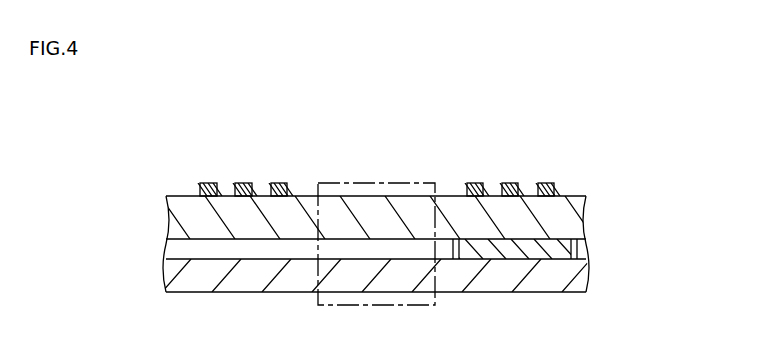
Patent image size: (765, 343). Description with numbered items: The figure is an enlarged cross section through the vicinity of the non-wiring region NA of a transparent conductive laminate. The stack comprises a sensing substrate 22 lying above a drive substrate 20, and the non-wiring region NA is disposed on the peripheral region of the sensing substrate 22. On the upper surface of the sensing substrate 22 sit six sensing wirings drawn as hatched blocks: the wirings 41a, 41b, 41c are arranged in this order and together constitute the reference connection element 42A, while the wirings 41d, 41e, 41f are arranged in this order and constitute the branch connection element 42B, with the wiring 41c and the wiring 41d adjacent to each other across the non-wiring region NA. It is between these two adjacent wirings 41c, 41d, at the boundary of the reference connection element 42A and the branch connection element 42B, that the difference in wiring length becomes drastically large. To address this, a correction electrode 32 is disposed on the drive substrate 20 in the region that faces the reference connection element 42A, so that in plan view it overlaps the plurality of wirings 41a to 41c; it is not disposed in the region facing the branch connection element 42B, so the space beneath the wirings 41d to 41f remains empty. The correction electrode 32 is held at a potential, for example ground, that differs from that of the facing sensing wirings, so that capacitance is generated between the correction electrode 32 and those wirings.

The drive substrate 20 is at (584, 279).
The sensing substrate 22 is at (586, 225).
The correction electrode 32 is at (584, 249).
The wiring 41a is at (548, 183).
The wiring 41b is at (510, 183).
The wiring 41c is at (478, 183).
The wiring 41d is at (279, 183).
The wiring 41e is at (243, 183).
The wiring 41f is at (203, 183).
The reference connection element 42A is at (593, 140).
The branch connection element 42B is at (312, 140).
The non-wiring region NA is at (375, 183).